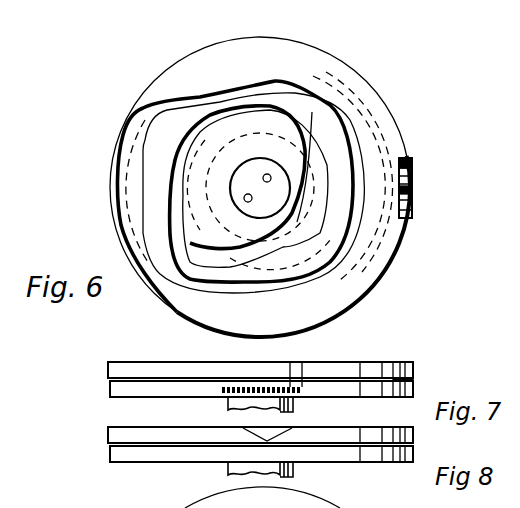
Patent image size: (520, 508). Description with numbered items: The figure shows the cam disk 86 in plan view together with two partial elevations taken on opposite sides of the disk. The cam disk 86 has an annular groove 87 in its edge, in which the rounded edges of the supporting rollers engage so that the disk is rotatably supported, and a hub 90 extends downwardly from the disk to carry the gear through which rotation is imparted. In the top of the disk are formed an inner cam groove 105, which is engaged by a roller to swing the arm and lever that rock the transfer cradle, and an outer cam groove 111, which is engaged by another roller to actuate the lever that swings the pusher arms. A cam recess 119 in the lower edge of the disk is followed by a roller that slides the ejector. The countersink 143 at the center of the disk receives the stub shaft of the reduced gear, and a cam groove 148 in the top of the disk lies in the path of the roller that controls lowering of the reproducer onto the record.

In FIG. 6, the cam disk 86 is at (375, 264).
In FIG. 7, the cam disk 86 is at (110, 372).
In FIG. 8, the cam disk 86 is at (360, 430).
In FIG. 7, the annular groove 87 is at (413, 381).
In FIG. 8, the annular groove 87 is at (110, 447).
In FIG. 7, the hub 90 is at (293, 405).
In FIG. 8, the hub 90 is at (293, 470).
In FIG. 6, the inner cam groove 105 is at (318, 147).
In FIG. 6, the outer cam groove 111 is at (233, 290).
In FIG. 6, the cam recess 119 is at (117, 198).
In FIG. 7, the cam recess 119 is at (297, 387).
In FIG. 6, the countersink 143 is at (263, 162).
In FIG. 6, the cam groove 148 is at (412, 190).
In FIG. 7, the cam groove 148 is at (245, 432).
In FIG. 8, the cam groove 148 is at (245, 432).